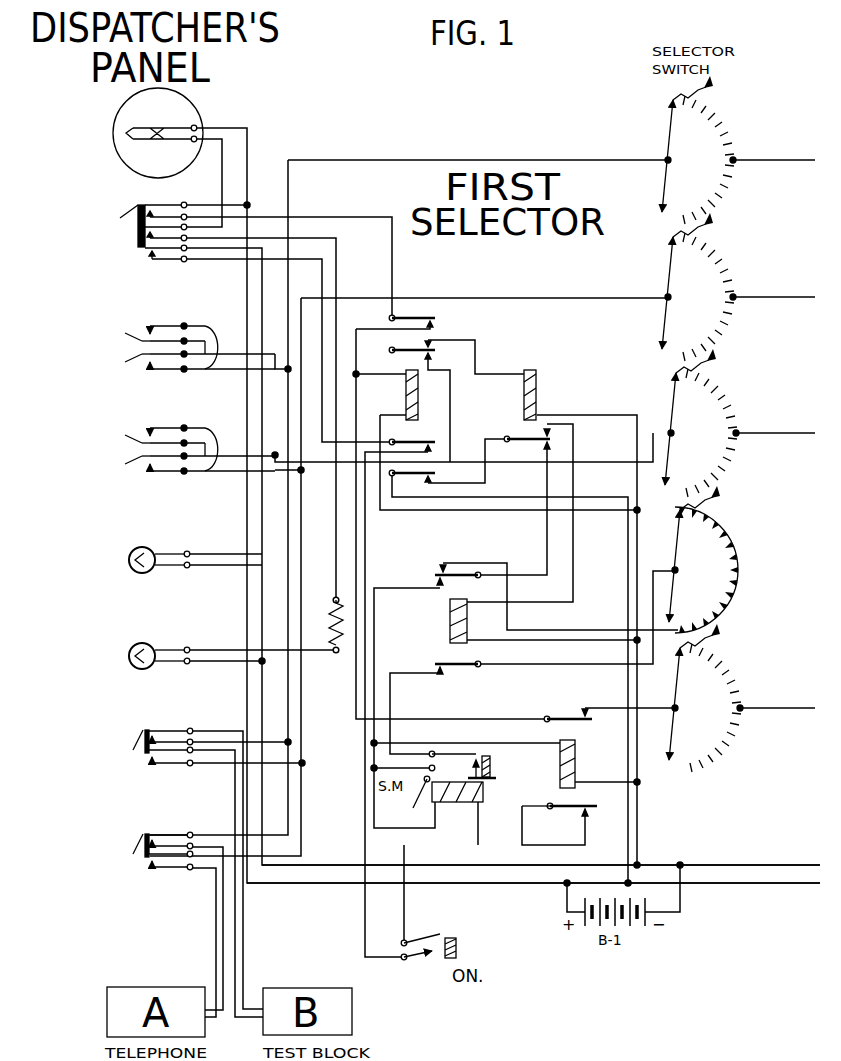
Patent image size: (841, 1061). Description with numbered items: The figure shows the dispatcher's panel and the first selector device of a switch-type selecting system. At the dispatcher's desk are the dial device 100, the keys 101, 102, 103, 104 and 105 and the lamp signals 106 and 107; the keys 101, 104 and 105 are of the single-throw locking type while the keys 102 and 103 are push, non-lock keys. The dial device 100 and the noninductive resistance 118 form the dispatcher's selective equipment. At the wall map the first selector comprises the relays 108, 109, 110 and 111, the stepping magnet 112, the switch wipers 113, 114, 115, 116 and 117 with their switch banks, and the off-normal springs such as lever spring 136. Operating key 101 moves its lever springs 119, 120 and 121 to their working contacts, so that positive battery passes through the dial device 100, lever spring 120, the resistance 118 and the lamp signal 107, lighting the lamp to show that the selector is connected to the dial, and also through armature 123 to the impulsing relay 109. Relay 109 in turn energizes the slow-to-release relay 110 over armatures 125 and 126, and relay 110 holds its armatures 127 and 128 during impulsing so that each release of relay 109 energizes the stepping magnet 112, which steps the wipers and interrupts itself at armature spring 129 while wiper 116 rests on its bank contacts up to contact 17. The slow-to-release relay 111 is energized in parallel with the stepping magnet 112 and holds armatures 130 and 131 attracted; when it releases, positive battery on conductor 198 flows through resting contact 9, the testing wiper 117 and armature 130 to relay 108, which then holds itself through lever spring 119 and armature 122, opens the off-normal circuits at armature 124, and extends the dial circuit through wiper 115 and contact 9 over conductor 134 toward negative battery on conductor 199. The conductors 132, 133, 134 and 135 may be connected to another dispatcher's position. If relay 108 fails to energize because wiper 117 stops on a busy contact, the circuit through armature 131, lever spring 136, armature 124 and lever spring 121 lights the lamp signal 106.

The dial device 100 is at (134, 133).
The key 101 is at (126, 232).
The key 102 is at (170, 347).
The key 103 is at (170, 449).
The key 104 is at (129, 747).
The key 105 is at (129, 851).
The lamp signal 106 is at (127, 560).
The lamp signal 107 is at (127, 656).
The relay 108 is at (391, 395).
The relay 109 is at (511, 395).
The relay 110 is at (436, 621).
The relay 111 is at (588, 764).
The stepping magnet 112 is at (448, 804).
The switch wiper 113 is at (666, 181).
The switch wiper 114 is at (666, 319).
The switch wiper 115 is at (670, 454).
The wiper 116 is at (670, 592).
The testing wiper 117 is at (674, 729).
The noninductive resistance 118 is at (335, 600).
The lever spring 119 is at (185, 203).
The lever spring 120 is at (185, 230).
The lever spring 121 is at (188, 261).
The armature 122 is at (412, 311).
The armature 123 is at (412, 344).
The armature 124 is at (412, 435).
The armature 125 is at (412, 486).
The armature 126 is at (525, 448).
The armature 127 is at (458, 582).
The armature 128 is at (458, 676).
The armature spring 129 is at (493, 760).
The armature 130 is at (567, 709).
The armature 131 is at (559, 819).
The conductor 132 is at (772, 151).
The conductor 133 is at (772, 288).
The conductor 134 is at (774, 424).
The conductor 135 is at (776, 698).
The lever spring 136 is at (430, 938).
The resting bank contact 9 is at (736, 160).
The bank contact 17 is at (664, 224).
The conductor 198 is at (533, 872).
The conductor 199 is at (541, 853).